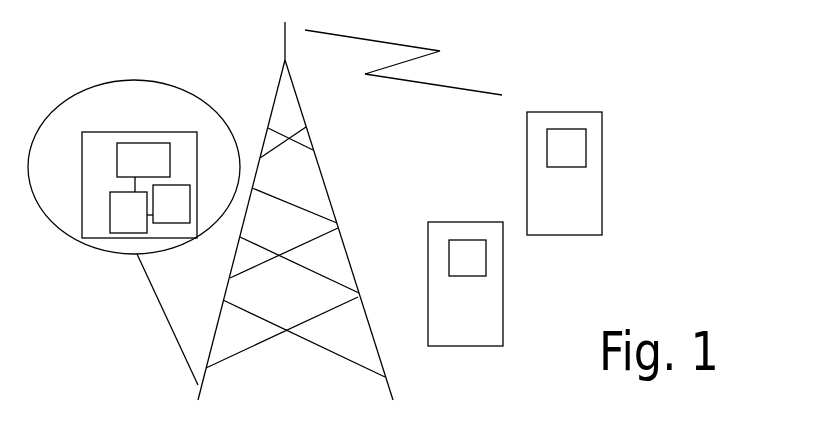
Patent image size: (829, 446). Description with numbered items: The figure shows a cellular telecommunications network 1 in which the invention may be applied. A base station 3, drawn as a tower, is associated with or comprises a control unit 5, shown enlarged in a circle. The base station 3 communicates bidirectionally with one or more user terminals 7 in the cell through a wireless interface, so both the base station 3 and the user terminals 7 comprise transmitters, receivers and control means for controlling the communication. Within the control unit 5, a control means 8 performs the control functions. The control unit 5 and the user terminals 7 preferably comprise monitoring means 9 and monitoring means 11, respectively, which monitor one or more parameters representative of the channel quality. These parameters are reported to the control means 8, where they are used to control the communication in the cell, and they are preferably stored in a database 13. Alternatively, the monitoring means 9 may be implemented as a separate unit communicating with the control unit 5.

The cellular telecommunications network 1 is at (115, 121).
The base station 3 is at (387, 376).
The control unit 5 is at (86, 165).
The user terminals 7 is at (541, 205).
The control means 8 is at (115, 222).
The monitoring means 9 is at (155, 215).
The monitoring means 11 is at (549, 161).
The database 13 is at (121, 175).